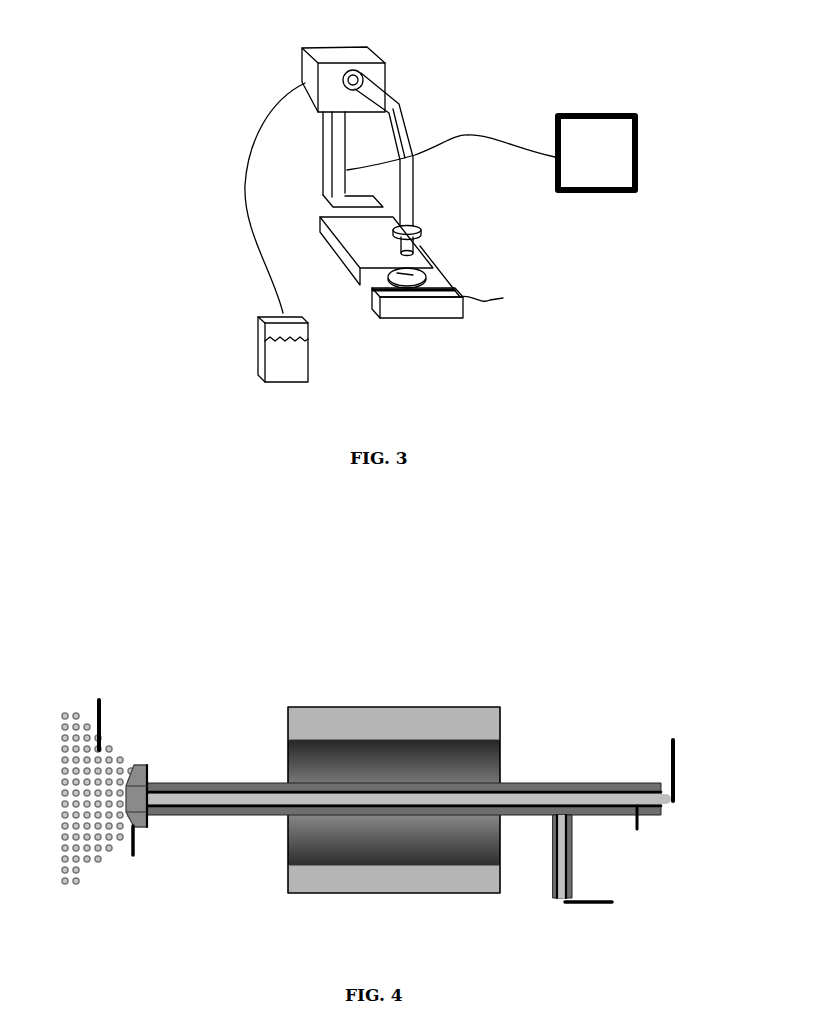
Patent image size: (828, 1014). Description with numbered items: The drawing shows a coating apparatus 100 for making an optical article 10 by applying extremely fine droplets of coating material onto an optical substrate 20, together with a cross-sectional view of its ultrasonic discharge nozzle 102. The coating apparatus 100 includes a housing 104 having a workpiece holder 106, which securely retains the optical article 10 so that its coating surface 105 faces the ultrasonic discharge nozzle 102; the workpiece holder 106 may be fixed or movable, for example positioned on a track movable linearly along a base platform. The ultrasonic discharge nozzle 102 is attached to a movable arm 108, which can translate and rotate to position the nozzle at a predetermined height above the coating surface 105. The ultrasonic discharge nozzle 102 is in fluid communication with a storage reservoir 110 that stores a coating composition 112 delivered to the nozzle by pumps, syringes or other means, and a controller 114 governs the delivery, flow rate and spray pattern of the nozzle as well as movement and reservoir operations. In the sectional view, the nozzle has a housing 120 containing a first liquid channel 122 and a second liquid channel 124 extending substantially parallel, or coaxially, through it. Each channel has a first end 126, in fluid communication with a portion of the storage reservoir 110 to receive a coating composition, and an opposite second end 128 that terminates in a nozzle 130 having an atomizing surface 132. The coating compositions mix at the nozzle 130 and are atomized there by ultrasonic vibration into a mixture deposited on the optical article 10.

In FIG. 3, the coating apparatus 100 is at (497, 64).
In FIG. 3, the housing 104 is at (340, 57).
In FIG. 3, the movable arm 108 is at (413, 213).
In FIG. 3, the ultrasonic discharge nozzle 102 is at (425, 247).
In FIG. 4, the ultrasonic discharge nozzle 102 is at (560, 653).
In FIG. 3, the optical substrate 20 is at (418, 250).
In FIG. 3, the optical article 10 is at (427, 267).
In FIG. 3, the coating surface 105 is at (360, 268).
In FIG. 3, the workpiece holder 106 is at (353, 295).
In FIG. 3, the controller 114 is at (608, 117).
In FIG. 3, the storage reservoir 110 is at (305, 376).
In FIG. 3, the coating composition 112 is at (285, 357).
In FIG. 4, the housing 120 is at (403, 715).
In FIG. 4, the first liquid channel 122 is at (193, 800).
In FIG. 4, the second liquid channel 124 is at (227, 808).
In FIG. 4, the first end 126 is at (628, 768).
In FIG. 4, the second end 128 is at (171, 829).
In FIG. 4, the nozzle 130 is at (143, 779).
In FIG. 4, the atomizing surface 132 is at (125, 862).